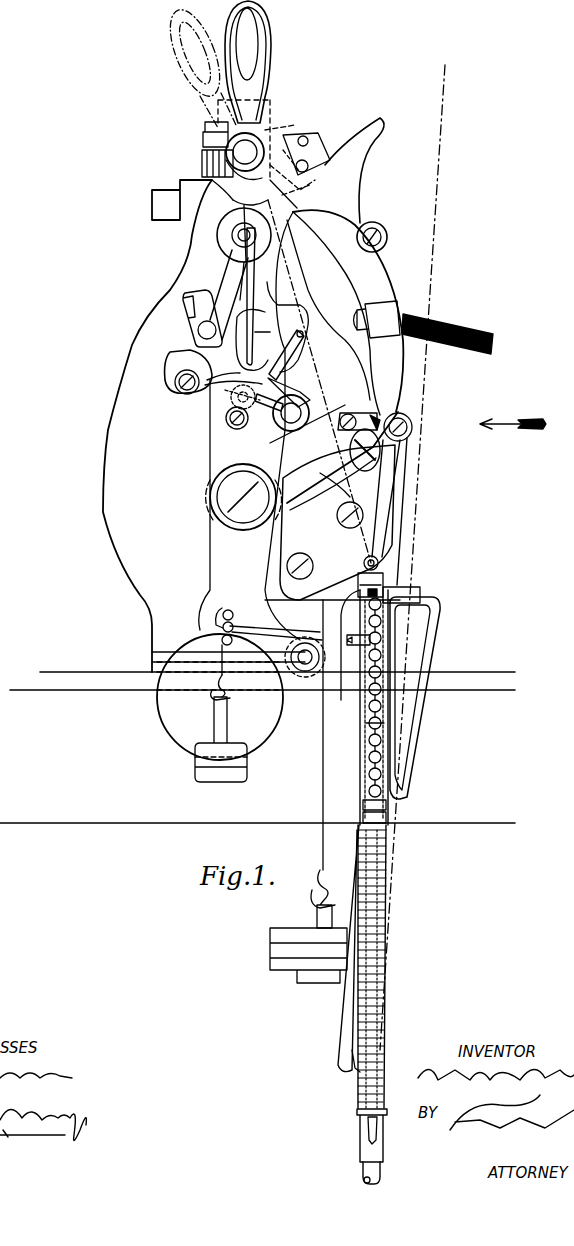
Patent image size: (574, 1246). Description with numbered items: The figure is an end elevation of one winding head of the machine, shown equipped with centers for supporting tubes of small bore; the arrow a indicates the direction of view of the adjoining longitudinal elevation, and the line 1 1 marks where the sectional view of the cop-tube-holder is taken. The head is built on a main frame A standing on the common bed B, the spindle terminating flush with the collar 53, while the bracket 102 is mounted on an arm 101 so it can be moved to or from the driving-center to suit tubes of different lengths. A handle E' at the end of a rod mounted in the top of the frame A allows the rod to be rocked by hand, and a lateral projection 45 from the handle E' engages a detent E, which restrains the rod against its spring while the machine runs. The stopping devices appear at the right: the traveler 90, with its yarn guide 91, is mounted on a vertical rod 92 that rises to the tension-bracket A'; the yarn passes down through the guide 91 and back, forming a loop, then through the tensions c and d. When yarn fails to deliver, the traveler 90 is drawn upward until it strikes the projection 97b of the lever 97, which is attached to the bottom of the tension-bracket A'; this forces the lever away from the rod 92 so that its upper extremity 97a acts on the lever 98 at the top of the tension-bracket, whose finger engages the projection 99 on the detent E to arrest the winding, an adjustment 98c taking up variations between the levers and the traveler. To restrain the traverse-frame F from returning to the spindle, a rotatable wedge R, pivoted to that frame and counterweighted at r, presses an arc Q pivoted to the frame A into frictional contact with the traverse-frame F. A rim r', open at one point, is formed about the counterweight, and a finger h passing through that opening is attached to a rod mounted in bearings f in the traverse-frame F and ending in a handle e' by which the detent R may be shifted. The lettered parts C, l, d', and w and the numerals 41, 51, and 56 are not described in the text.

The main frame A is at (204, 386).
The tension-bracket A' is at (332, 522).
The bed B is at (183, 684).
The rod C is at (262, 290).
The detent E is at (345, 312).
The handle E' is at (232, 64).
The traverse-frame F is at (275, 467).
The arc Q is at (200, 407).
The rotatable wedge R is at (244, 417).
The counterweight r is at (291, 413).
The rim r' is at (291, 401).
The bearings f is at (222, 398).
The arm or finger h is at (312, 386).
The handle e' is at (302, 348).
The pin l is at (252, 233).
The section line 1 is at (243, 287).
The arrow a is at (513, 436).
The tension c is at (386, 640).
The tension d is at (361, 707).
The chain link d' is at (357, 722).
The weight w is at (237, 748).
The arm 41 is at (353, 457).
The lateral projection 45 is at (270, 150).
The screw 51 is at (388, 256).
The collar 53 is at (241, 235).
The pivot 56 is at (364, 566).
The traveler 90 is at (378, 1152).
The guide 91 is at (370, 1124).
The vertical rod 92 is at (376, 1171).
The lever 97 is at (342, 1012).
The upper extremity of lever 97a is at (392, 596).
The projection 97b is at (352, 1068).
The lever 98 is at (436, 503).
The adjustment 98c is at (420, 596).
The projection 99 is at (352, 438).
The arm 101 is at (200, 333).
The bracket 102 is at (232, 270).